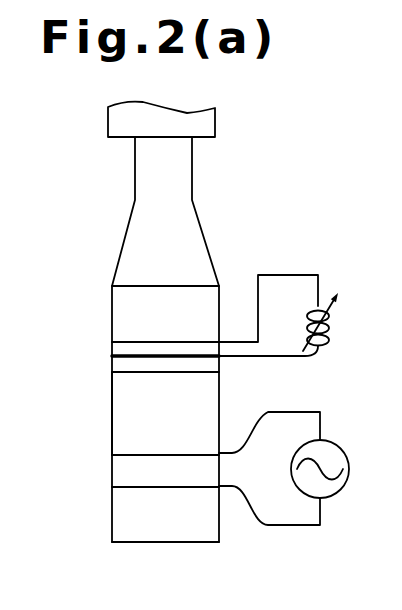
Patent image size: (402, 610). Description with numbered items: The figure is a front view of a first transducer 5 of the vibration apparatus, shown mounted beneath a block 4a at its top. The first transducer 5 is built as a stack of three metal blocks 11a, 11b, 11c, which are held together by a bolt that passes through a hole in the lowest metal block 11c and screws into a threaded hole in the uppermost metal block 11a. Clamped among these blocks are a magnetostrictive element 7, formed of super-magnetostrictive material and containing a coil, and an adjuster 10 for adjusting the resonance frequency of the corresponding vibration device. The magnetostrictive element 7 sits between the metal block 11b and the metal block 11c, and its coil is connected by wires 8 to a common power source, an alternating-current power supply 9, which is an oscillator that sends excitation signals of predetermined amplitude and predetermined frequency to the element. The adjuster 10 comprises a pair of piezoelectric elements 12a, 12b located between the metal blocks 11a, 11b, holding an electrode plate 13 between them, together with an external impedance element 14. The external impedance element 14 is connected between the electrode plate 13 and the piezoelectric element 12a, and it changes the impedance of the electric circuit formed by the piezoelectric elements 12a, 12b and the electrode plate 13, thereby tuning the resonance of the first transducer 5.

The lens mounting block 4a is at (208, 122).
The first transducer 5 is at (93, 279).
The adjuster 10 is at (316, 258).
The metal block 11a is at (210, 302).
The metal block 11b is at (120, 408).
The metal block 11c is at (122, 528).
The piezoelectric element 12a is at (112, 343).
The piezoelectric element 12b is at (218, 366).
The electrode plate 13 is at (112, 356).
The external impedance element 14 is at (333, 330).
The magnetostrictive element 7 is at (117, 472).
The wires 8 is at (255, 427).
The alternating-current power supply 9 is at (341, 492).